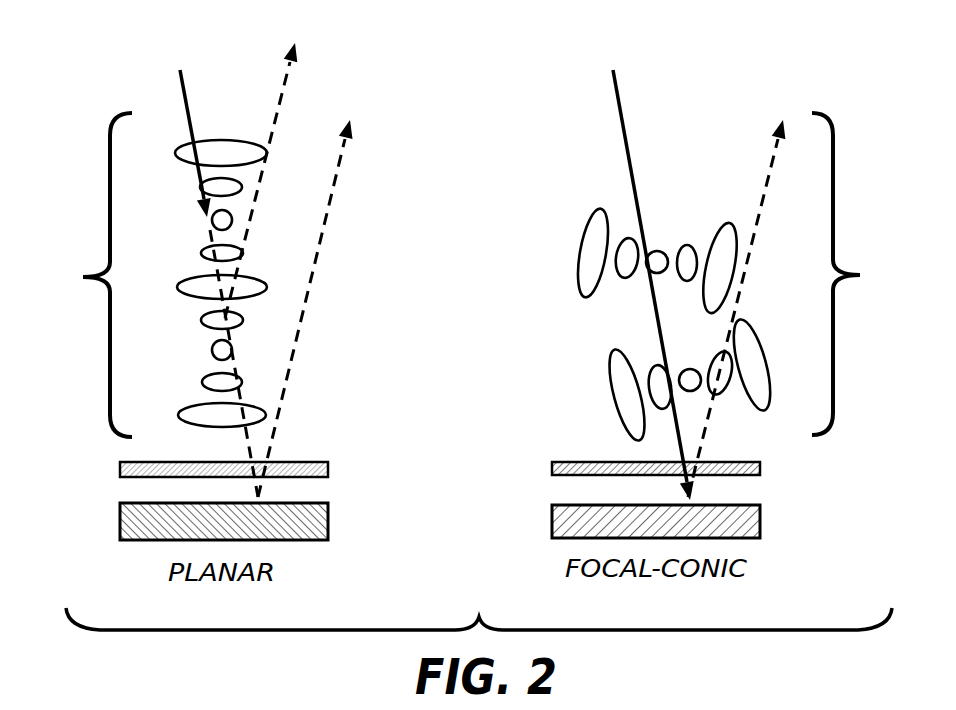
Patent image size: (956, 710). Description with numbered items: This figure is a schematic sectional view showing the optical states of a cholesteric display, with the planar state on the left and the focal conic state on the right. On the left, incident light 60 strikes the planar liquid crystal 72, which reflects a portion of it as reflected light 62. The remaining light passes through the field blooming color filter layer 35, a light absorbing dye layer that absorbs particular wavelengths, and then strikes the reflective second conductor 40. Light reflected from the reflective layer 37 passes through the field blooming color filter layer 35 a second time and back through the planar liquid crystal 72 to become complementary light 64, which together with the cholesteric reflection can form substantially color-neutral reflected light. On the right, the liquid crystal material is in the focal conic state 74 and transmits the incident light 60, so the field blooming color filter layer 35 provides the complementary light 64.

The field blooming color filter layer 35 is at (120, 470).
The reflective layer 37 is at (120, 530).
The reflective second conductor 40 is at (760, 518).
The incident light 60 is at (180, 82).
The reflected light 62 is at (283, 90).
The complementary light 64 is at (338, 178).
The planar liquid crystal 72 is at (158, 275).
The focal conic state 74 is at (735, 278).